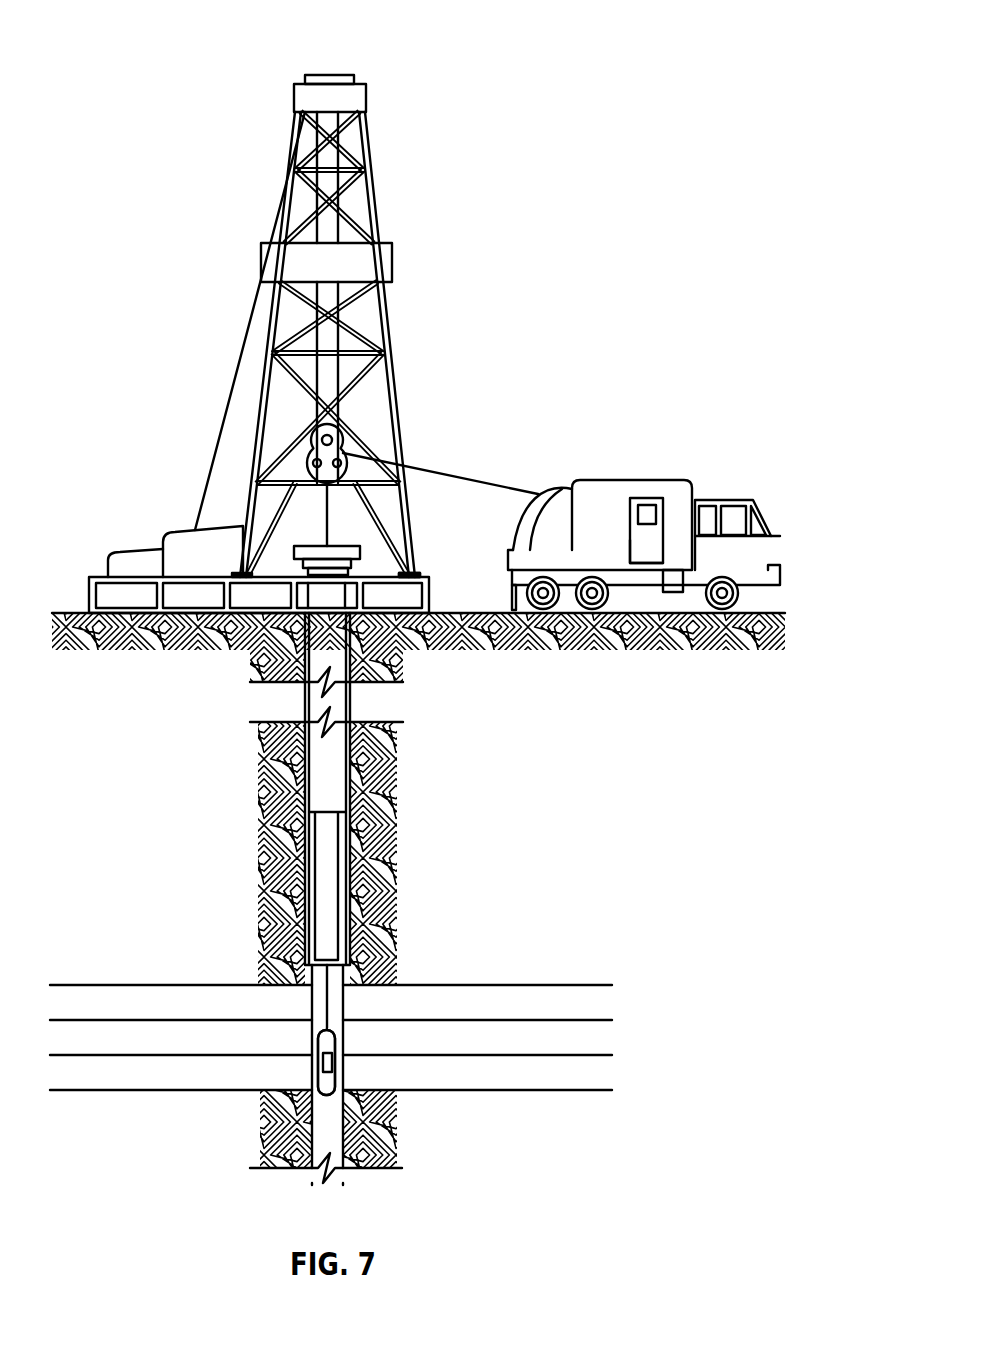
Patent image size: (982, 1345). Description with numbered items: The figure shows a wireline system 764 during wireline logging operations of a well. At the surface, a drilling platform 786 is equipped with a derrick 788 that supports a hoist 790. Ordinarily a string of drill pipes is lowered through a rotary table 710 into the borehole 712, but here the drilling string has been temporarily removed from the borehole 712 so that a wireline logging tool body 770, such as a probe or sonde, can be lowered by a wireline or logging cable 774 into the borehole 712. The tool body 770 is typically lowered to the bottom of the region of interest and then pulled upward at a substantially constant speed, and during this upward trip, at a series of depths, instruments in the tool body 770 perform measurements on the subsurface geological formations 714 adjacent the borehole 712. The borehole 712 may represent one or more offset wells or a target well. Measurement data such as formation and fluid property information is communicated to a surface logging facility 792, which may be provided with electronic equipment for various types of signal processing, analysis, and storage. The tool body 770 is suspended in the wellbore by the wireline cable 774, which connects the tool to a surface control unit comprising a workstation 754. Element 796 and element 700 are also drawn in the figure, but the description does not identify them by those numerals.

The wireline system 764 is at (114, 40).
The hoist 790 is at (350, 436).
The rotary table 710 is at (361, 551).
The derrick 788 is at (417, 574).
The drilling platform 786 is at (92, 593).
The wireline or logging cable 774 is at (490, 483).
The surface logging facility 792 is at (590, 480).
The surface control unit 796 is at (646, 505).
The workstation 754 is at (645, 563).
The borehole 712 is at (307, 1008).
The wireline logging tool body 770 is at (336, 1047).
The sensor 700 is at (334, 1063).
The subsurface geological formations 714 is at (612, 985).